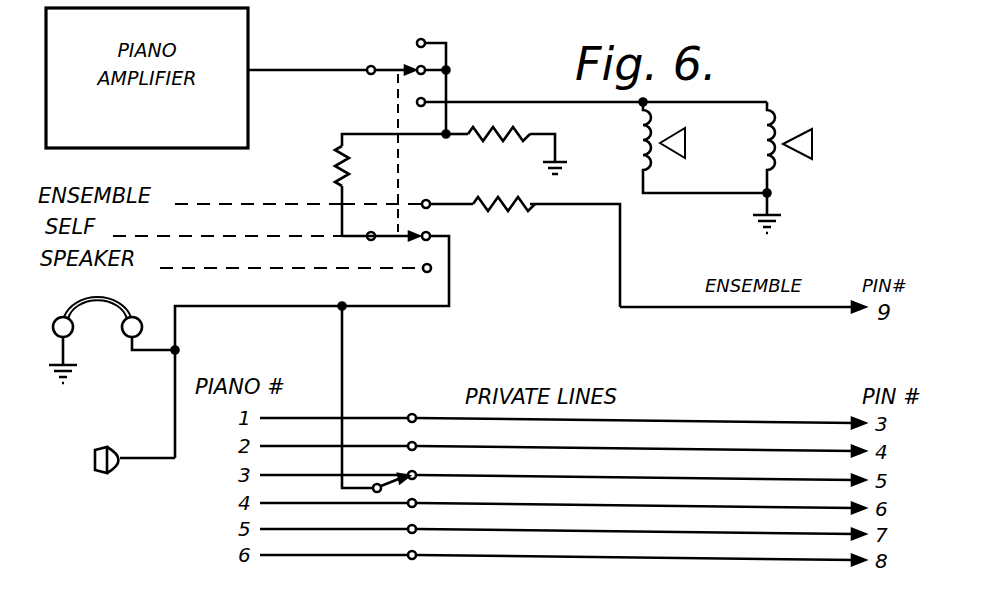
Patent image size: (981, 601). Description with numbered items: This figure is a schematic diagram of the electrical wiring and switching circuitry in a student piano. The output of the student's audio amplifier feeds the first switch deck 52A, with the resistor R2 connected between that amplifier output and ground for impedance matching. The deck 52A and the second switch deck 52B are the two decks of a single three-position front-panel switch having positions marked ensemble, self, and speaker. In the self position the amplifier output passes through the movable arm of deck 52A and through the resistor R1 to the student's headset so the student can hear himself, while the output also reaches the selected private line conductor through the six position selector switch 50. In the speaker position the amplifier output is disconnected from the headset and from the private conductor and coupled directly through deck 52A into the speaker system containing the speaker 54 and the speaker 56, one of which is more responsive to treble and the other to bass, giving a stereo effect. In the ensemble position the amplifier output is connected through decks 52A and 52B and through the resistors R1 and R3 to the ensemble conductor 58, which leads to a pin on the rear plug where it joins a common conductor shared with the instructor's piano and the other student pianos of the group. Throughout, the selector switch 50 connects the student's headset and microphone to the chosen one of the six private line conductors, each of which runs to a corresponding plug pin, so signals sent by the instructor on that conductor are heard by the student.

The first switch deck 52A is at (382, 74).
The second switch deck 52B is at (450, 244).
The resistor R1 is at (335, 163).
The resistor R2 is at (488, 143).
The resistor R3 is at (520, 209).
The speaker 54 is at (664, 162).
The speaker 56 is at (775, 172).
The ensemble conductor 58 is at (670, 309).
The six position selector switch 50 is at (377, 484).